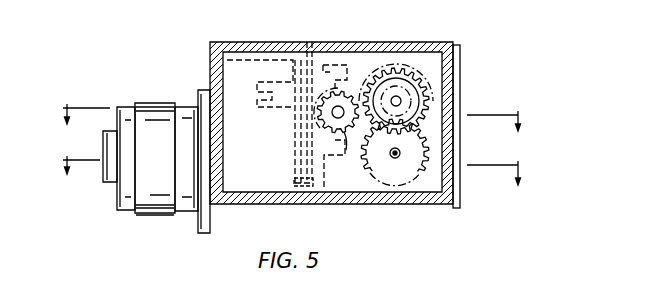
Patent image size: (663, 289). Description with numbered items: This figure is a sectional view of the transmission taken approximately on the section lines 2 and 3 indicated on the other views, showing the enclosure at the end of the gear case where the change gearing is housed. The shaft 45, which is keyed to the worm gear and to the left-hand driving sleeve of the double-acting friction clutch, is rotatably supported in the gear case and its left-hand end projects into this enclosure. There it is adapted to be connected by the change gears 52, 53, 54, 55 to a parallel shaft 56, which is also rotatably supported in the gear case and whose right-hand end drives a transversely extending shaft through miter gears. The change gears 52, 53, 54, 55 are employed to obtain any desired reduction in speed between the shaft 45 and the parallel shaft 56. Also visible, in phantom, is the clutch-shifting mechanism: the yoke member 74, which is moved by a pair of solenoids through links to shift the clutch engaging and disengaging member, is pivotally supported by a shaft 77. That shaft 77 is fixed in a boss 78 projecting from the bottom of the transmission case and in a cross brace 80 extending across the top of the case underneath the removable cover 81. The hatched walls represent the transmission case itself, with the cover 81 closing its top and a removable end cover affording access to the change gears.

The section line 2- 2 is at (288, 127).
The section line 3- 3 is at (290, 178).
The shaft 45 is at (343, 108).
The change gear 52 is at (346, 150).
The change gear 53 is at (432, 88).
The change gear 54 is at (393, 83).
The change gear 55 is at (408, 165).
The parallel shaft 56 is at (392, 158).
The yoke member 74 is at (298, 102).
The shaft 77 is at (307, 43).
The boss 78 is at (299, 184).
The cross brace 80 is at (253, 58).
The removable cover 81 is at (372, 43).